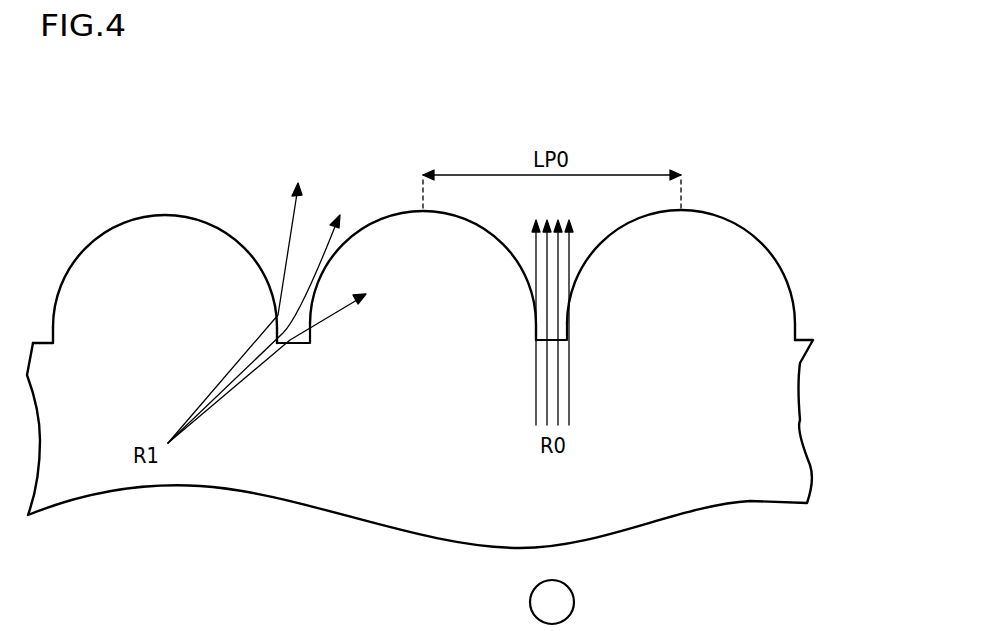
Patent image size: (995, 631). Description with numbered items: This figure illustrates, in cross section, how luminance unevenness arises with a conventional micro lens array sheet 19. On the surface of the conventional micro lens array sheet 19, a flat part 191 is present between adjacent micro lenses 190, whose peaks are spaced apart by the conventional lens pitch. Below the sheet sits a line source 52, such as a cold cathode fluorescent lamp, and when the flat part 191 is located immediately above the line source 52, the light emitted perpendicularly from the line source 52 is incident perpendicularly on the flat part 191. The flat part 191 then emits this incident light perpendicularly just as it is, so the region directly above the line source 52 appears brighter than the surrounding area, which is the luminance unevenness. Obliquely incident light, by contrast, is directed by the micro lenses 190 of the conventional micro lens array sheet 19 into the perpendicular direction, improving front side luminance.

The conventional micro lens array sheet 19 is at (438, 126).
The micro lens 190 is at (467, 221).
The flat part 191 is at (300, 345).
The line source 52 is at (573, 594).